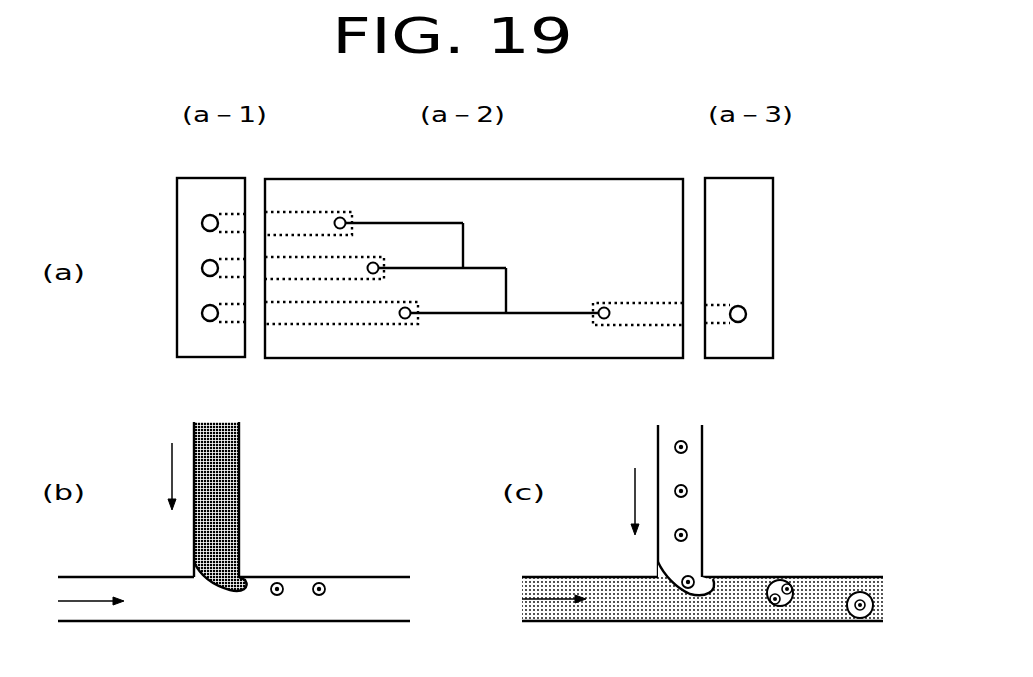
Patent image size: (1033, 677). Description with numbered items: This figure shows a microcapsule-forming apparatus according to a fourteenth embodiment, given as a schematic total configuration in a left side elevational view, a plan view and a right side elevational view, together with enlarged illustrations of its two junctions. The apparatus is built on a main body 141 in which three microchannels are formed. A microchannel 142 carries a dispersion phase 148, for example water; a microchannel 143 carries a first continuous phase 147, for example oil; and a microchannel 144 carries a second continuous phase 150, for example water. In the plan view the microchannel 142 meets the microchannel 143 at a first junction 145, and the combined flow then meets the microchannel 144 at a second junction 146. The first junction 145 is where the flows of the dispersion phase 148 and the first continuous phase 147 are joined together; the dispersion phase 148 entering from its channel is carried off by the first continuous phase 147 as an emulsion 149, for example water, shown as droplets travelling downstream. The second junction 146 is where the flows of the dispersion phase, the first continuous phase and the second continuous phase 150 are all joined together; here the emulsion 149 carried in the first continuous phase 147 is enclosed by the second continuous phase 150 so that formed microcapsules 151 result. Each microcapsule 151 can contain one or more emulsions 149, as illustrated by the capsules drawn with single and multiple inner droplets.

The main body 141 is at (203, 178).
The microchannel for dispersion phase 142 is at (407, 223).
The microchannel for first continuous phase 143 is at (396, 268).
The microchannel for second continuous phase 144 is at (440, 312).
The first junction 145 is at (466, 267).
The second junction 146 is at (506, 312).
The first continuous phase 147 is at (108, 592).
The dispersion phase 148 is at (239, 462).
The emulsion 149 is at (319, 596).
The second continuous phase 150 is at (572, 592).
The microcapsules 151 is at (847, 617).